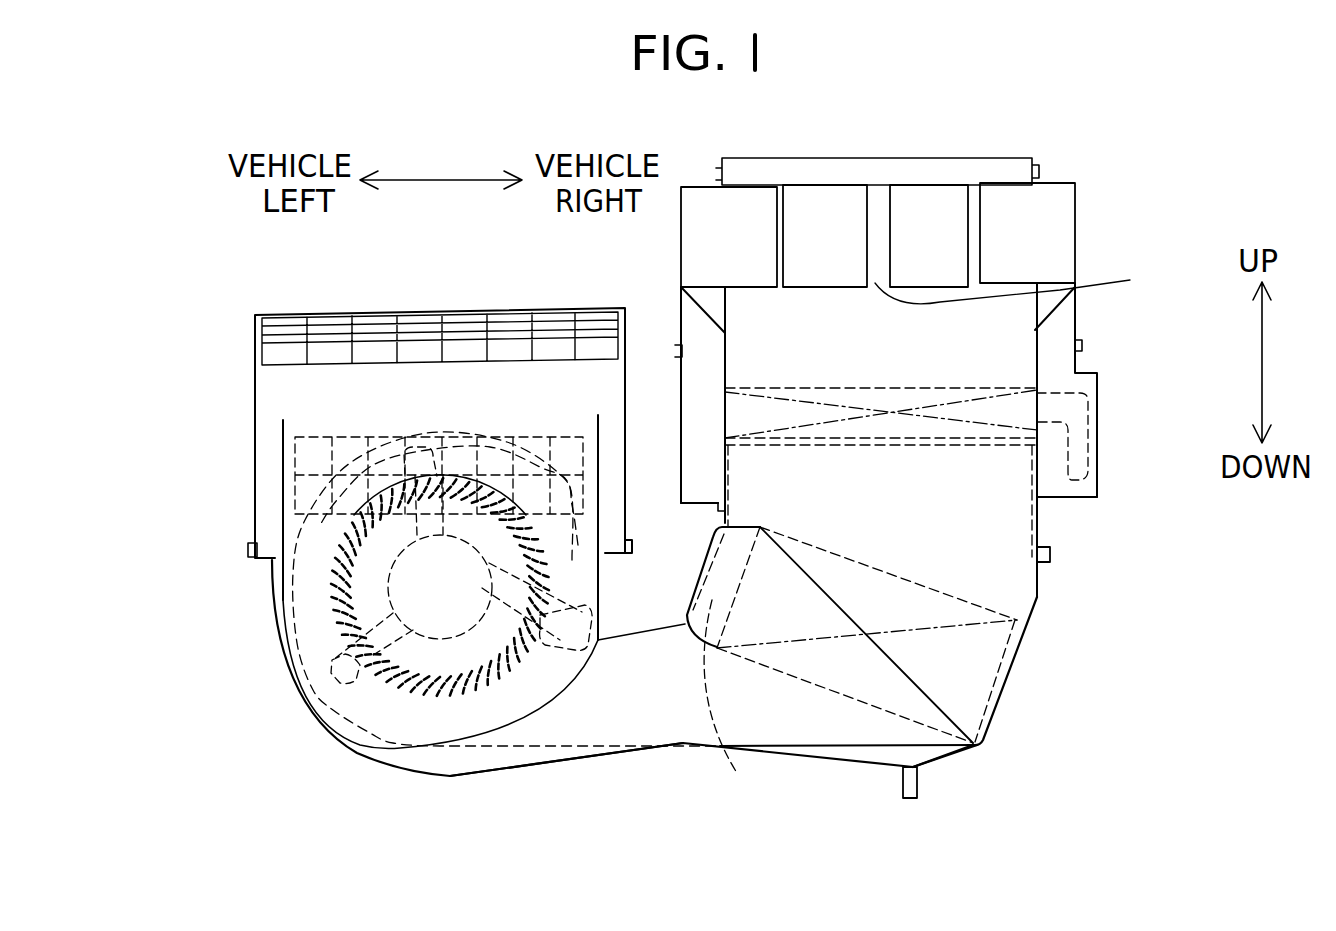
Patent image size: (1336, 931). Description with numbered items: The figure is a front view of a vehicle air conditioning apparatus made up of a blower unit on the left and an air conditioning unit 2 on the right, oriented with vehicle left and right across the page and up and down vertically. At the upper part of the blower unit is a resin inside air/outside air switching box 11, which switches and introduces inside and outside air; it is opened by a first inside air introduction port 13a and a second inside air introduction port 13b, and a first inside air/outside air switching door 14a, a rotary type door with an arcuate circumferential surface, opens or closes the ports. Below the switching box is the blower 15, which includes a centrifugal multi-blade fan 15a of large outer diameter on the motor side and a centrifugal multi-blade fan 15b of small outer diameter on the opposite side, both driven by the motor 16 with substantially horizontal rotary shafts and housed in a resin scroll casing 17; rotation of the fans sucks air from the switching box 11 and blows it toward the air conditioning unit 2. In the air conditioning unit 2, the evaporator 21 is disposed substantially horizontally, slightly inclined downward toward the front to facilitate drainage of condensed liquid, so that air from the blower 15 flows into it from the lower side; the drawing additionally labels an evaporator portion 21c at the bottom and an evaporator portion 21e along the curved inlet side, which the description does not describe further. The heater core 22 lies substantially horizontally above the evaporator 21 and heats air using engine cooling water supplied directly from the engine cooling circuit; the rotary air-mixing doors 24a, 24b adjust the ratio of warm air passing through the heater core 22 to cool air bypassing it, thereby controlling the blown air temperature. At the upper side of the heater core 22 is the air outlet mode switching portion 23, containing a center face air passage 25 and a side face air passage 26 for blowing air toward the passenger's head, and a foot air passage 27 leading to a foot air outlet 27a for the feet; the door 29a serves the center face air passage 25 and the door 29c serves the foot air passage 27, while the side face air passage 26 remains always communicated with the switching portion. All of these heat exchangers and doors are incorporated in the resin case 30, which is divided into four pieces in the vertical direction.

The air conditioning unit 2 is at (1050, 625).
The inside air/outside air switching box 11 is at (255, 388).
The first inside air introduction port 13a is at (408, 352).
The second inside air introduction port 13b is at (307, 455).
The first inside air/outside air switching door 14a is at (248, 546).
The blower 15 is at (310, 745).
The centrifugal multi-blade fan 15a is at (388, 592).
The centrifugal multi-blade fan 15b is at (337, 613).
The motor 16 is at (415, 660).
The scroll casing 17 is at (443, 763).
The evaporator 21 is at (967, 658).
The case mounting leg 21c is at (917, 783).
The case inner curved wall 21e is at (748, 702).
The heater core 22 is at (1000, 408).
The air outlet mode switching portion 23 is at (1026, 279).
The air-mixing door 24a is at (1132, 585).
The air-mixing door 24b is at (1050, 562).
The center face air passage 25 is at (940, 212).
The side face air passage 26 is at (723, 215).
The foot air passage 27 is at (698, 343).
The foot air outlet 27a is at (697, 507).
The door 29a is at (1039, 170).
The door 29c is at (1084, 345).
The case 30 is at (997, 707).